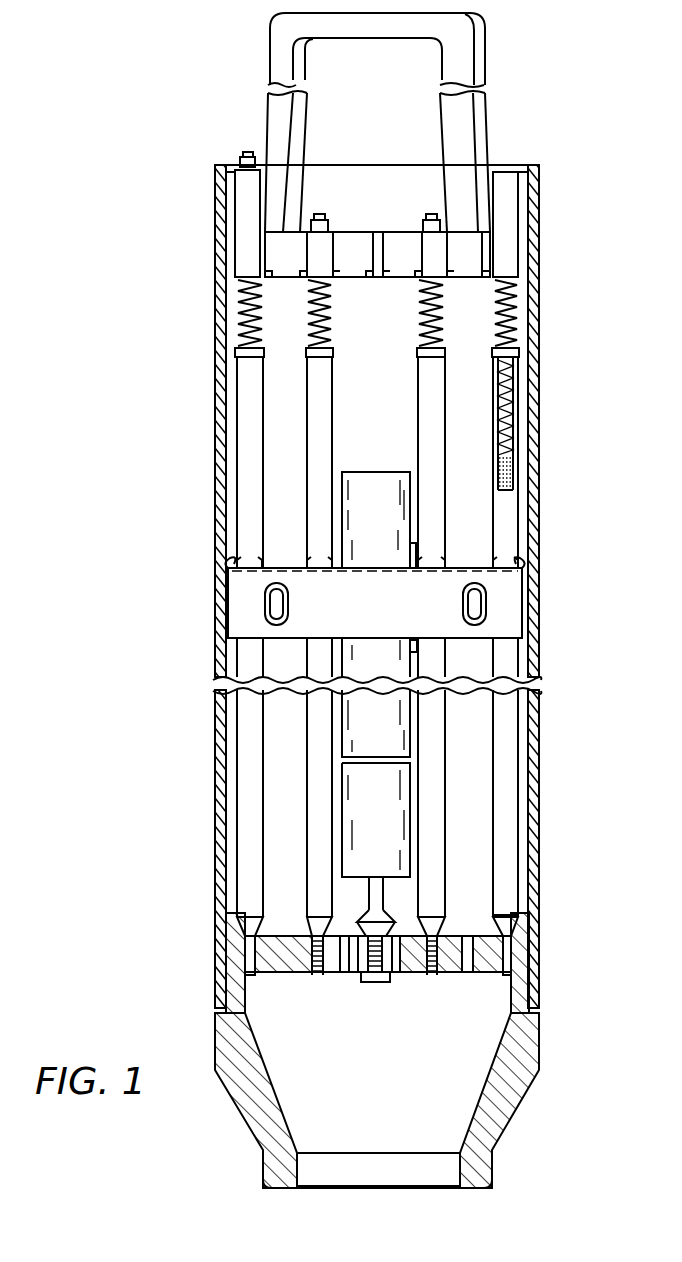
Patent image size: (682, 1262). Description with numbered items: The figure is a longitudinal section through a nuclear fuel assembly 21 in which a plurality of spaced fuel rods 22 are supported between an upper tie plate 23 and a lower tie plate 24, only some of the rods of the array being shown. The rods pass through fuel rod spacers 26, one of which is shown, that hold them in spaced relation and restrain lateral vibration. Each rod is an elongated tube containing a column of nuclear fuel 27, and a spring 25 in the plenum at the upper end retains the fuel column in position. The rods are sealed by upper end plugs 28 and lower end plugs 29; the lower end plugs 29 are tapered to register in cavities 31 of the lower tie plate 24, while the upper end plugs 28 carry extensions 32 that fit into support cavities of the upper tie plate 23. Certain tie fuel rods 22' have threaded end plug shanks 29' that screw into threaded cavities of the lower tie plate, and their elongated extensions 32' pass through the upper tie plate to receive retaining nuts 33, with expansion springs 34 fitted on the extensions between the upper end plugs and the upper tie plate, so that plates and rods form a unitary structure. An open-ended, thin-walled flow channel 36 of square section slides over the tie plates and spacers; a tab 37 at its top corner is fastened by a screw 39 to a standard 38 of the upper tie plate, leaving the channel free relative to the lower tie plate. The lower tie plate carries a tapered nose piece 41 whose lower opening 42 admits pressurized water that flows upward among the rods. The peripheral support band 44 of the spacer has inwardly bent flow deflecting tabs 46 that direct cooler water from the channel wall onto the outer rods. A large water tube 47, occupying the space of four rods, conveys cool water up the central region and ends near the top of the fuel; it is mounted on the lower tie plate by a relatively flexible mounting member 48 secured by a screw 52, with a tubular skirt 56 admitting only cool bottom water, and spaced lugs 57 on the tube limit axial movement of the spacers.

The fuel assembly 21 is at (548, 437).
The fuel rods 22 is at (203, 637).
The tie fuel rods 22' is at (354, 637).
The upper tie plate 23 is at (520, 230).
The lower tie plate 24 is at (523, 923).
The spring 25 is at (516, 385).
The fuel rod spacers 26 is at (514, 646).
The nuclear fuel 27 is at (512, 462).
The upper end plugs 28 is at (237, 353).
The lower end plugs 29 is at (332, 943).
The threaded end plug shanks 29' is at (352, 977).
The cavities 31 is at (225, 932).
The extensions 32 is at (292, 313).
The extensions 32' is at (375, 196).
The retaining nuts 33 is at (328, 222).
The expansion springs 34 is at (520, 300).
The flow channel 36 is at (528, 568).
The tab 37 is at (228, 165).
The standard 38 is at (237, 218).
The screw 39 is at (246, 153).
The nose piece 41 is at (522, 1108).
The opening 42 is at (333, 1155).
The peripheral support band 44 is at (243, 607).
The flow deflecting tabs 46 is at (258, 560).
The large water tube 47 is at (410, 740).
The mounting member 48 is at (383, 903).
The screw 52 is at (372, 983).
The tubular skirt 56 is at (392, 880).
The lugs 57 is at (417, 648).